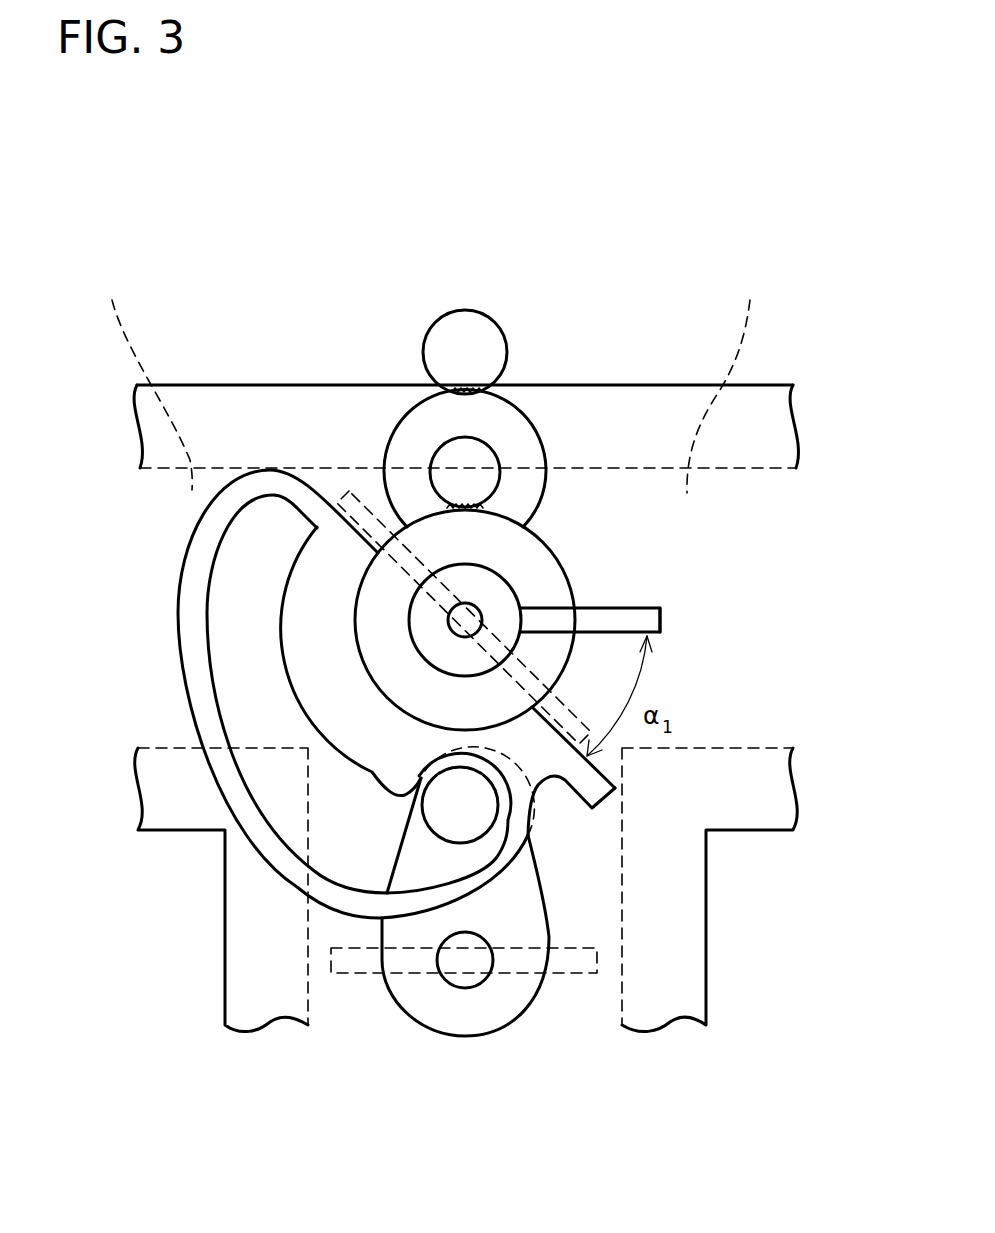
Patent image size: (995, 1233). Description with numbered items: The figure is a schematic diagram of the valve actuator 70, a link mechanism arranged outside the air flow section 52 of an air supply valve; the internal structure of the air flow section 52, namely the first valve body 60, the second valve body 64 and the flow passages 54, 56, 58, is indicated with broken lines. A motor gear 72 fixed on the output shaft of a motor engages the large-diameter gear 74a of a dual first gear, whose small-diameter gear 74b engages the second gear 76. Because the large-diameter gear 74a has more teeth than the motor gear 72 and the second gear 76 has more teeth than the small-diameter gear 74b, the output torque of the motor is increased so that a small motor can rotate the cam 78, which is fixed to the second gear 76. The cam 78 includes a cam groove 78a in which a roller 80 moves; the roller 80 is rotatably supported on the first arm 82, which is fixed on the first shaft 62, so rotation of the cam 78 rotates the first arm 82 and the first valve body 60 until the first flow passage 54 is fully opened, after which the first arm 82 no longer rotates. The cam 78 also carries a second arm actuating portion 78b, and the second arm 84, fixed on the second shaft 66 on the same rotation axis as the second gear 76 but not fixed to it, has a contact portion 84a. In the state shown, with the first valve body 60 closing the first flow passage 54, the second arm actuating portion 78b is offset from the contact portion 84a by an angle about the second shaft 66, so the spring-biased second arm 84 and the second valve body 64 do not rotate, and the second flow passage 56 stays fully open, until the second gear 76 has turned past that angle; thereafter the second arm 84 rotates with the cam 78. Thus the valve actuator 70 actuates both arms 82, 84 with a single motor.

The air flow section 52 is at (760, 410).
The first flow passage 54 is at (330, 990).
The second flow passage 56 is at (146, 381).
The flow passage 58 is at (727, 382).
The first valve body 60 is at (577, 965).
The first shaft 62 is at (463, 980).
The second valve body 64 is at (358, 498).
The second shaft 66 is at (516, 502).
The valve actuator 70 is at (198, 278).
The motor gear 72 is at (473, 332).
The large-diameter gear 74a is at (430, 425).
The small-diameter gear 74b is at (445, 460).
The second gear 76 is at (545, 570).
The cam 78 is at (418, 702).
The cam groove 78a is at (213, 583).
The second arm actuating portion 78b is at (610, 795).
The roller 80 is at (450, 808).
The first arm 82 is at (400, 932).
The second arm 84 is at (697, 625).
The contact portion 84a is at (640, 621).